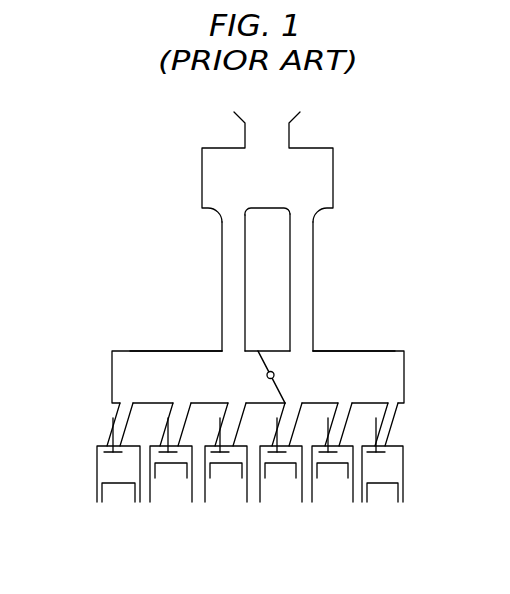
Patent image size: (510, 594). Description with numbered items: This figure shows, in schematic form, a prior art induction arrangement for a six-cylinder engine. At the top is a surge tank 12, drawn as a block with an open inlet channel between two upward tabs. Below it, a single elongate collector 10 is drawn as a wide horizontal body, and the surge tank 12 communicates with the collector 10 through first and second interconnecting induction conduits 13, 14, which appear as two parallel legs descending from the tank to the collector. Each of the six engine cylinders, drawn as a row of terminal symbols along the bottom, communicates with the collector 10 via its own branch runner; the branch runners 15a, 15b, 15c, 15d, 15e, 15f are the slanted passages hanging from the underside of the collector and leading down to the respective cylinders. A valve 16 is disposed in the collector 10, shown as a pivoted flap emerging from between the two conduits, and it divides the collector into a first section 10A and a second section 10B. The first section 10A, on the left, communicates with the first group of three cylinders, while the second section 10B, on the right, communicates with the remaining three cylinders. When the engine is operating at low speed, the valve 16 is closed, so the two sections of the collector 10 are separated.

The collector 10 is at (118, 378).
The first section 10A is at (157, 360).
The second section 10B is at (364, 363).
The surge tank 12 is at (213, 183).
The first interconnecting induction conduit 13 is at (226, 272).
The second interconnecting induction conduit 14 is at (308, 271).
The branch runner 15a is at (118, 417).
The branch runner 15b is at (182, 417).
The branch runner 15c is at (232, 417).
The branch runner 15d is at (290, 414).
The branch runner 15e is at (346, 415).
The branch runner 15f is at (391, 412).
The valve 16 is at (262, 362).